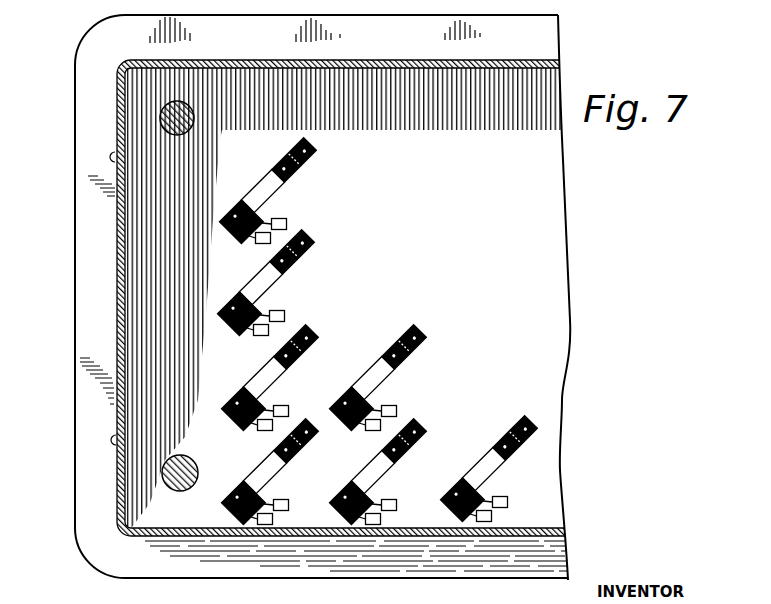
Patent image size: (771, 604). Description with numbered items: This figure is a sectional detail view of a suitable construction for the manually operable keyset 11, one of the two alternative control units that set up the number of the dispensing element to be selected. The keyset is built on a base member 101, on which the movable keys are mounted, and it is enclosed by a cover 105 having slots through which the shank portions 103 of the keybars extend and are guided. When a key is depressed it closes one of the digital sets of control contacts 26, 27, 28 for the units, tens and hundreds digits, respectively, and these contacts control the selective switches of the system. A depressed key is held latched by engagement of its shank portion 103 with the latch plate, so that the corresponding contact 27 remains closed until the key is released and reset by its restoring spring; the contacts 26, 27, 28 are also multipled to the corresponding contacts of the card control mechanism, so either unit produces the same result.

The keyset 11 is at (570, 245).
The units contacts 26 is at (492, 460).
The tens contacts 27 is at (383, 373).
The hundreds contacts 28 is at (275, 275).
The base member 101 is at (86, 290).
The shank portion 103 is at (315, 248).
The cover 105 is at (117, 463).